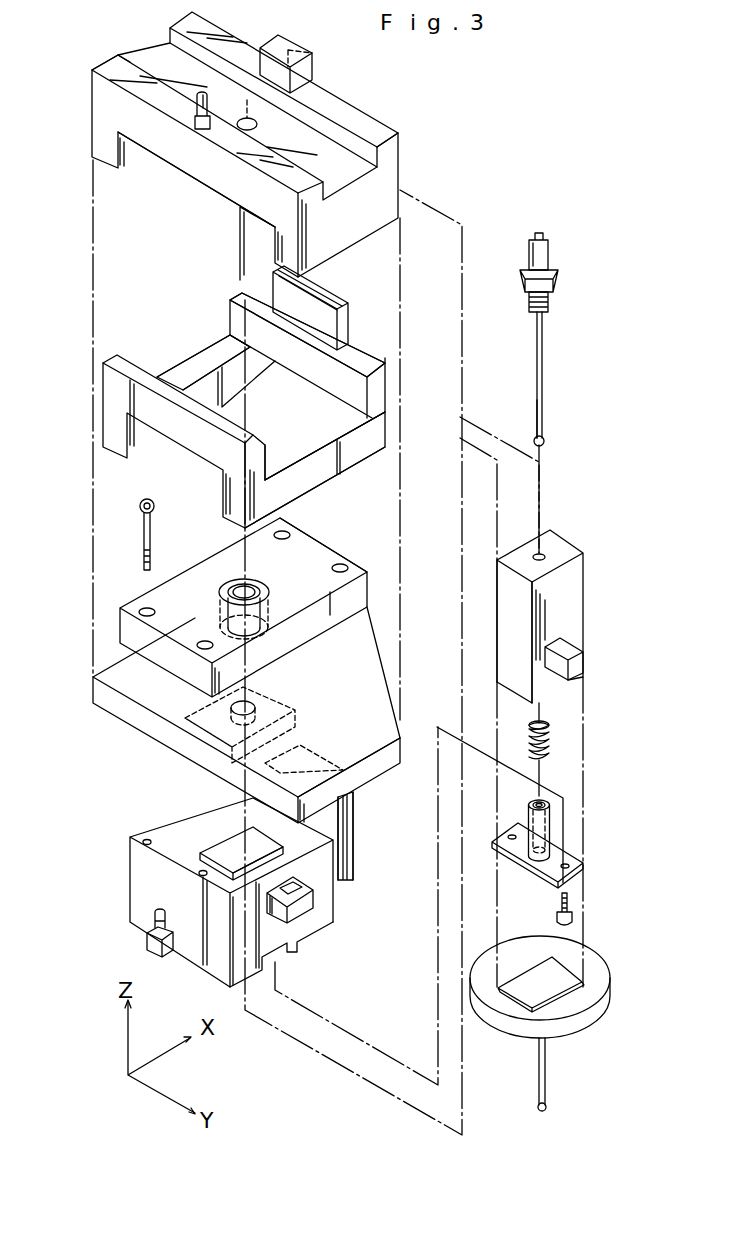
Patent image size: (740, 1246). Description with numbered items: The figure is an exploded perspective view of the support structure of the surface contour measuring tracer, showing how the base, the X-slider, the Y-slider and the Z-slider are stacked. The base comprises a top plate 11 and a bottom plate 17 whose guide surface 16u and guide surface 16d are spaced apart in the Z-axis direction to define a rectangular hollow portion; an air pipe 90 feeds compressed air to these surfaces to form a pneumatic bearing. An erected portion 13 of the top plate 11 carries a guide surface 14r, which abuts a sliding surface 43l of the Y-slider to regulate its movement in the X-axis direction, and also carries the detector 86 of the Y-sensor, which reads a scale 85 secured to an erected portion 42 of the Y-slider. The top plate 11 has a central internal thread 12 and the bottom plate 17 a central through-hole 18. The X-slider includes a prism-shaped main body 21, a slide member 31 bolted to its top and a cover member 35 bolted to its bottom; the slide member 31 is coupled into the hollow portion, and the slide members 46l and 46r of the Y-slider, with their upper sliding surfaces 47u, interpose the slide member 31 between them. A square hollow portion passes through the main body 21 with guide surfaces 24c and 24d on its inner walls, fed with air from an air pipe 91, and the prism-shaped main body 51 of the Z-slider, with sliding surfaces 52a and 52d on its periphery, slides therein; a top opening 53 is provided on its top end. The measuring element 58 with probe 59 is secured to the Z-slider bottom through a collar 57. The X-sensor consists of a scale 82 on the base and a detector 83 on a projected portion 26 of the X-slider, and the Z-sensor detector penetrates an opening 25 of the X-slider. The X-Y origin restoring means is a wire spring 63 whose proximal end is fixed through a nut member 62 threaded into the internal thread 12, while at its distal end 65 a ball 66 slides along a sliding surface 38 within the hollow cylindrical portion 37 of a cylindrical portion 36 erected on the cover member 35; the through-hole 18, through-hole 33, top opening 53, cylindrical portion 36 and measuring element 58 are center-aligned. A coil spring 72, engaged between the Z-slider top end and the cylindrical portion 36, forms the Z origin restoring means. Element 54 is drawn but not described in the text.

The top plate 11 is at (360, 218).
The erected portion 13 is at (110, 62).
The sliding surface 43l is at (197, 163).
The air pipe 90 is at (198, 103).
The detector 86 is at (312, 66).
The scale 85 is at (318, 313).
The guide surface 14r is at (357, 403).
The erected portion 42 is at (368, 345).
The slide member 46l is at (188, 373).
The slide member 46r is at (320, 477).
The sliding surface 47u is at (338, 422).
The through-hole 33 is at (232, 578).
The slide member 31 is at (125, 625).
The guide surface 16u is at (313, 553).
The bottom plate 17 is at (137, 718).
The guide surface 16d is at (325, 712).
The through-hole 18 is at (260, 705).
The scale 82 is at (360, 782).
The main body 21 is at (140, 883).
The opening 25 is at (232, 860).
The sliding surface 52a is at (237, 858).
The sliding surface 52d is at (330, 830).
The projected portion 26 is at (300, 905).
The detector 83 is at (298, 882).
The air pipe 91 is at (148, 920).
The nut member 62 is at (548, 258).
The internal thread 12 is at (550, 298).
The wire spring 63 is at (543, 326).
The distal end 65 is at (543, 410).
The ball 66 is at (544, 444).
The main body 51 is at (580, 572).
The top opening 53 is at (542, 553).
The guide surface 24d is at (505, 583).
The guide surface 24c is at (570, 610).
The projection 54 is at (562, 662).
The coil spring 72 is at (550, 730).
The cylindrical portion 36 is at (552, 838).
The hollow cylindrical portion 37 is at (550, 823).
The sliding surface 38 is at (541, 802).
The cover member 35 is at (527, 863).
The collar 57 is at (603, 975).
The measuring element 58 is at (547, 1055).
The probe 59 is at (546, 1107).